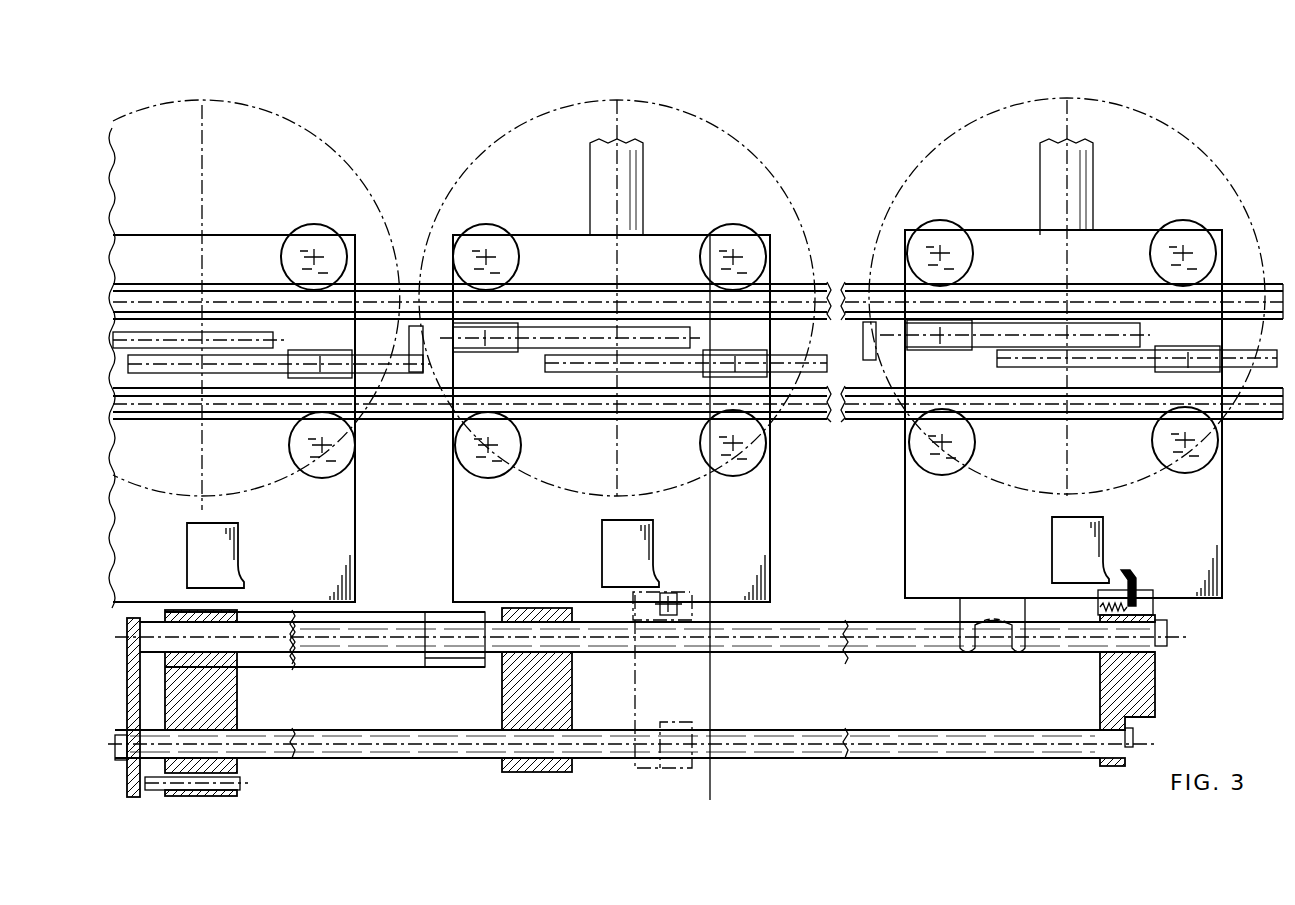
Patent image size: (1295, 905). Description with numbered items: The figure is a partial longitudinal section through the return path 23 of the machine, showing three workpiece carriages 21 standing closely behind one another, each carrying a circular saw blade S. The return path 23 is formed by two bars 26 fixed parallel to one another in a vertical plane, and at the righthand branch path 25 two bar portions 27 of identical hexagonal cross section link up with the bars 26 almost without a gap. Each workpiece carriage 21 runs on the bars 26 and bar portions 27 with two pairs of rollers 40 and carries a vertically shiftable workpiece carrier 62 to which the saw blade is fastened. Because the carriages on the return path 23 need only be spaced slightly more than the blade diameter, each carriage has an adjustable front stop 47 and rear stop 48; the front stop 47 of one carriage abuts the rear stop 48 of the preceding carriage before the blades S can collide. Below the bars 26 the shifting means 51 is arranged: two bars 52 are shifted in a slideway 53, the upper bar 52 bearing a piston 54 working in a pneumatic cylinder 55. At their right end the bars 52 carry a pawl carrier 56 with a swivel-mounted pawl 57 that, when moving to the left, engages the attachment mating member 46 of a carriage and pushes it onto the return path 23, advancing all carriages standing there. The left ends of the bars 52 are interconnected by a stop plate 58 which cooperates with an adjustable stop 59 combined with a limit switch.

The circular saw blade S is at (330, 150).
The workpiece carriage 21 is at (340, 558).
The return path 23 is at (405, 198).
The branch path 25 is at (849, 198).
The bar 26 is at (243, 300).
The bar portion 27 is at (1003, 300).
The roller 40 is at (316, 230).
The attachment mating member 46 is at (195, 548).
The front stop 47 is at (148, 375).
The rear stop 48 is at (170, 340).
The shifting means 51 is at (1178, 672).
The bar 52 is at (800, 733).
The slideway 53 is at (220, 700).
The piston 54 is at (433, 655).
The pneumatic cylinder 55 is at (335, 660).
The pawl carrier 56 is at (1155, 707).
The pawl 57 is at (1133, 572).
The stop plate 58 is at (128, 618).
The stop 59 is at (155, 790).
The workpiece carrier 62 is at (638, 170).